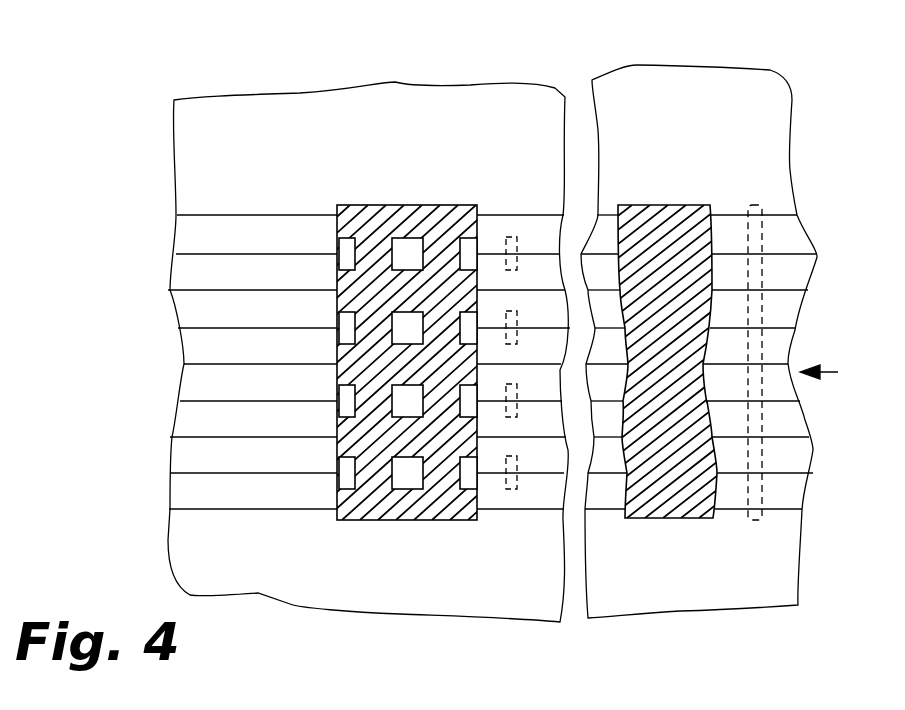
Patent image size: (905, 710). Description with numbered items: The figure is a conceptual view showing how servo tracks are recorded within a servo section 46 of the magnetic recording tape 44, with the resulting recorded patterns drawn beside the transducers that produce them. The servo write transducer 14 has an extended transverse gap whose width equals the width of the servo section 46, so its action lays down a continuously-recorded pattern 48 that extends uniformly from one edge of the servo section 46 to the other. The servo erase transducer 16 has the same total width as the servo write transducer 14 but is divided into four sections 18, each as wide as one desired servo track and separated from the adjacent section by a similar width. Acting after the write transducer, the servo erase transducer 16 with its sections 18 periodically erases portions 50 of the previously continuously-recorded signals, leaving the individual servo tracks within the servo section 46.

The magnetic recording tape 44 is at (202, 108).
The servo section 46 is at (445, 362).
The erased portions 50 is at (361, 306).
The sections of the servo erase transducer 18 is at (513, 340).
The continuously-recorded pattern 48 is at (672, 517).
The servo write transducer 14 is at (755, 522).
The servo erase transducer 16 is at (501, 534).